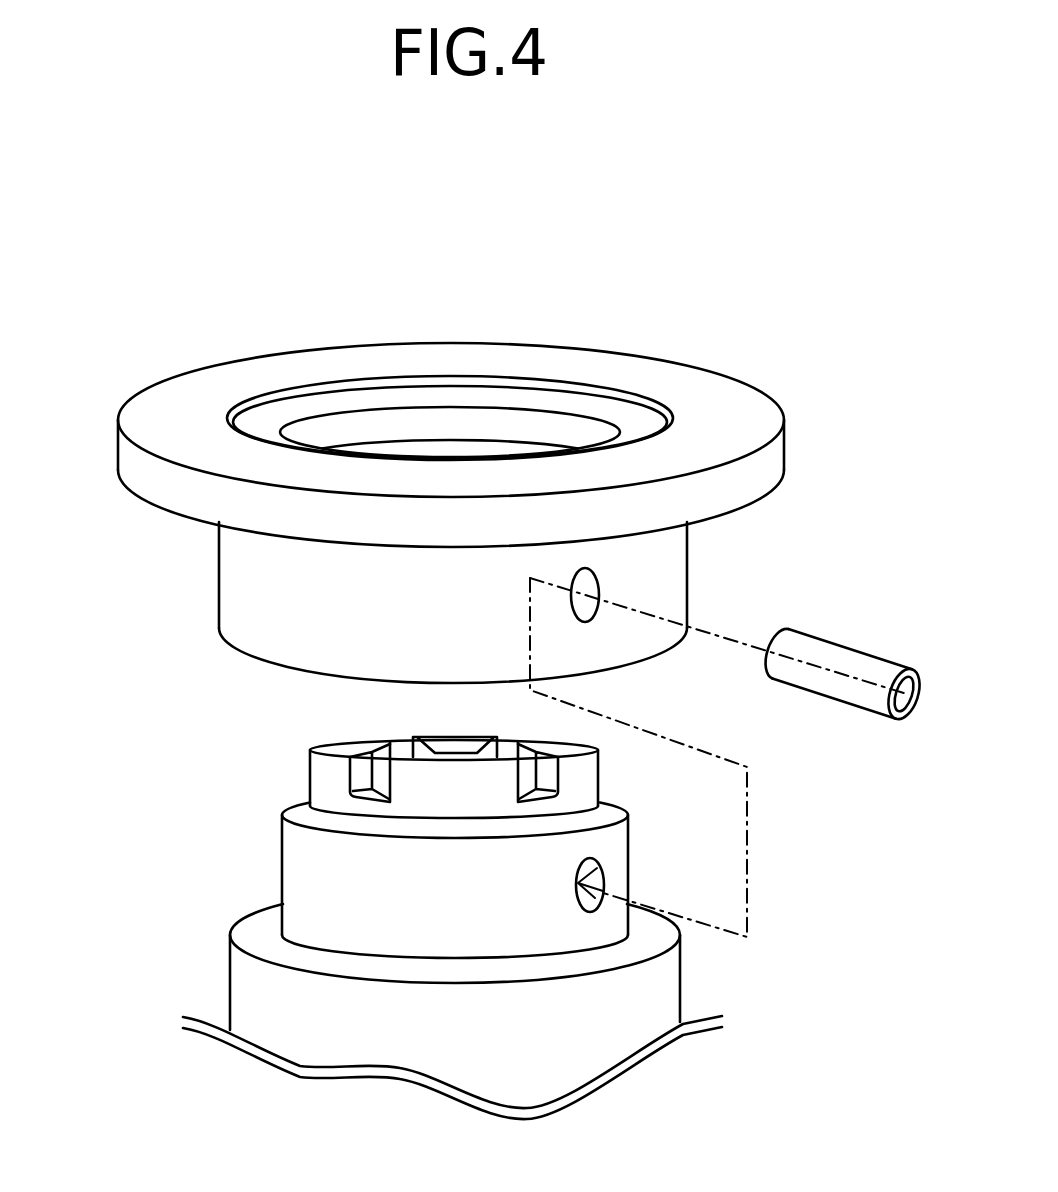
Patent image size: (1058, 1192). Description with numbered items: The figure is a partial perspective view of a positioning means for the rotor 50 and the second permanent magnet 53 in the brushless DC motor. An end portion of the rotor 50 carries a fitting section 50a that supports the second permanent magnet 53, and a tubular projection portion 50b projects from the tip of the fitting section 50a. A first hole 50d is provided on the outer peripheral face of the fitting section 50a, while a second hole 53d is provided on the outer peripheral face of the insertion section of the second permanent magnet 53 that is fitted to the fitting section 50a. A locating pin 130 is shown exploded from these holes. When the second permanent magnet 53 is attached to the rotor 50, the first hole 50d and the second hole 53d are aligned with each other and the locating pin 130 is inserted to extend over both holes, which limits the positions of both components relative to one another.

The second permanent magnet 53 is at (330, 362).
The second hole 53d is at (603, 590).
The locating pin 130 is at (875, 673).
The projection portion 50b is at (320, 772).
The fitting section 50a is at (283, 852).
The first hole 50d is at (605, 873).
The rotor 50 is at (320, 1033).